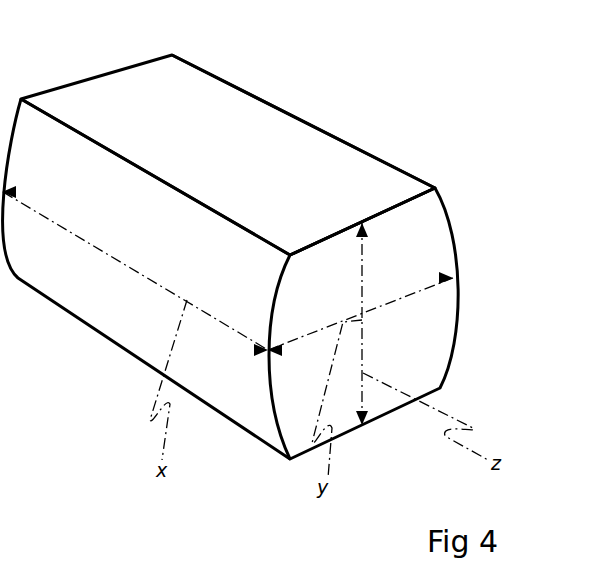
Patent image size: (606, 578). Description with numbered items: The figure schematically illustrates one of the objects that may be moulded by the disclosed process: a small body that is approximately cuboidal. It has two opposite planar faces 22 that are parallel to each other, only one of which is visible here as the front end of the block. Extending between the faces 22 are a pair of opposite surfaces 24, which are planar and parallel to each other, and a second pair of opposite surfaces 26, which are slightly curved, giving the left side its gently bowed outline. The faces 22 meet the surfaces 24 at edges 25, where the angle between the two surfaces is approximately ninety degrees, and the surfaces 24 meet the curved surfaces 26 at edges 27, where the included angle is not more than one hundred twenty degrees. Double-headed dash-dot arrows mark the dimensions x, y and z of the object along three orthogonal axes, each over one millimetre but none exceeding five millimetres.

The planar face 22 is at (425, 325).
The planar surface 24 is at (302, 152).
The edge 25 is at (391, 215).
The curved surface 26 is at (65, 290).
The edge 27 is at (218, 78).